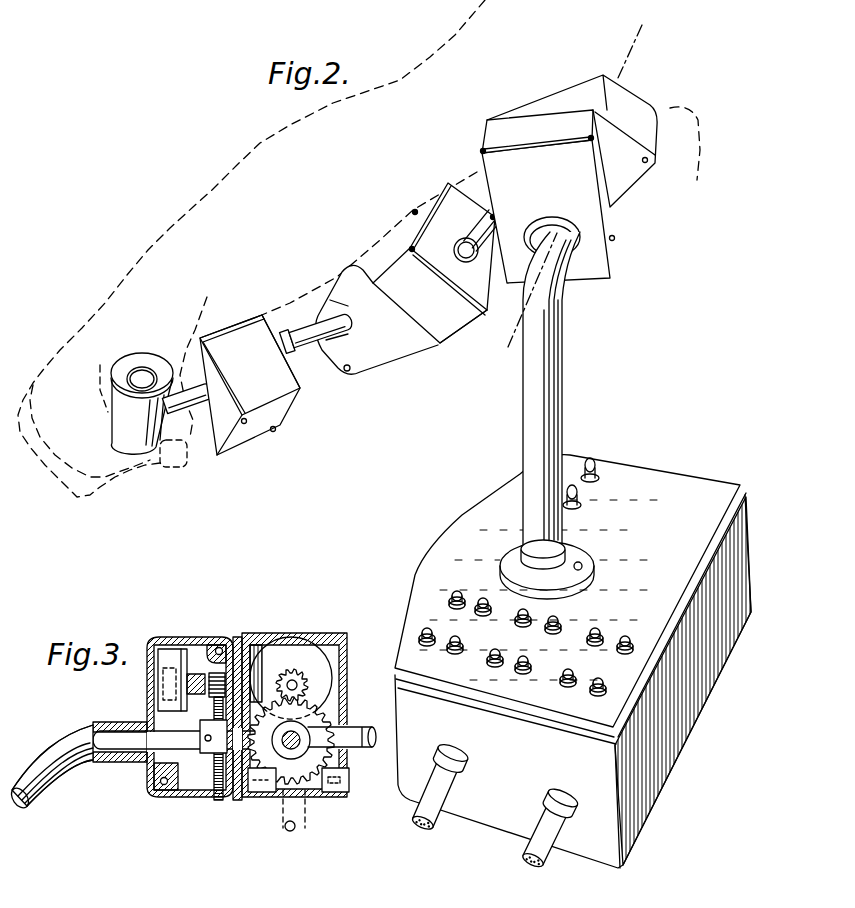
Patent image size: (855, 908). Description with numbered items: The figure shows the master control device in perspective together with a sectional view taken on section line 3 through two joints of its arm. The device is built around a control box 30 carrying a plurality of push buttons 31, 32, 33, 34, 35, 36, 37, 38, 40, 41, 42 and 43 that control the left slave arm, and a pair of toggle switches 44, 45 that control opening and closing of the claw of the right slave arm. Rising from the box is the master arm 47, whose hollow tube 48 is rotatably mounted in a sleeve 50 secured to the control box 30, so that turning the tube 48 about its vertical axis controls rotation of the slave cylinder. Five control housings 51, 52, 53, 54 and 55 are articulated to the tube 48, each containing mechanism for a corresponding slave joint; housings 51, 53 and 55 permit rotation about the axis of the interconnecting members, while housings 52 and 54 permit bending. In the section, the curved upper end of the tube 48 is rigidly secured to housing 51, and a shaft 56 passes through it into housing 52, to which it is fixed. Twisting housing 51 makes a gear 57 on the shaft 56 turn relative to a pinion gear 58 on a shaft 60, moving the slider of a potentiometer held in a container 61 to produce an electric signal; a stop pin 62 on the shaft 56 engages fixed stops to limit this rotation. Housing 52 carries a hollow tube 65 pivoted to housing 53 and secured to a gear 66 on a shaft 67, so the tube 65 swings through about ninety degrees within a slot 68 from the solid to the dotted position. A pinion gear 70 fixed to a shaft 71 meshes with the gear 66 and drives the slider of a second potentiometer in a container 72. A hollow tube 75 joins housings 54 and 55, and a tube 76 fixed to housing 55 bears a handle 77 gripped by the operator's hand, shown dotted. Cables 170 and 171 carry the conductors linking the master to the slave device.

In FIG. 2, the section line 3— 3 is at (622, 64).
In FIG. 2, the control box 30 is at (681, 490).
In FIG. 2, the push button 31 is at (427, 644).
In FIG. 2, the push button 32 is at (455, 651).
In FIG. 2, the push button 33 is at (458, 594).
In FIG. 2, the push button 34 is at (485, 600).
In FIG. 2, the push button 35 is at (495, 664).
In FIG. 2, the push button 36 is at (523, 671).
In FIG. 2, the push button 37 is at (515, 619).
In FIG. 2, the push button 38 is at (553, 620).
In FIG. 2, the push button 40 is at (568, 684).
In FIG. 2, the push button 41 is at (598, 693).
In FIG. 2, the push button 42 is at (596, 632).
In FIG. 2, the push button 43 is at (627, 640).
In FIG. 2, the toggle switch 44 is at (581, 497).
In FIG. 2, the toggle switch 45 is at (590, 460).
In FIG. 2, the master arm 47 is at (470, 335).
In FIG. 2, the hollow tube 48 is at (563, 395).
In FIG. 3, the hollow tube 48 is at (45, 742).
In FIG. 2, the sleeve 50 is at (567, 557).
In FIG. 2, the control housing 51 is at (562, 184).
In FIG. 3, the control housing 51 is at (168, 638).
In FIG. 2, the control housing 52 is at (648, 132).
In FIG. 3, the control housing 52 is at (270, 636).
In FIG. 2, the control housing 53 is at (408, 226).
In FIG. 2, the control housing 54 is at (342, 290).
In FIG. 2, the control housing 55 is at (233, 332).
In FIG. 3, the shaft 56 is at (181, 754).
In FIG. 3, the gear 57 is at (216, 801).
In FIG. 3, the pinion gear 58 is at (220, 672).
In FIG. 3, the shaft 60 is at (238, 640).
In FIG. 3, the container 61 is at (166, 635).
In FIG. 3, the stop pin 62 is at (143, 766).
In FIG. 2, the hollow tube 65 is at (487, 217).
In FIG. 3, the hollow tube 65 is at (363, 748).
In FIG. 3, the gear 66 is at (283, 795).
In FIG. 3, the shaft 67 is at (331, 715).
In FIG. 2, the slot 68 is at (347, 371).
In FIG. 3, the slot 68 is at (337, 794).
In FIG. 3, the pinion gear 70 is at (297, 675).
In FIG. 3, the shaft 71 is at (332, 664).
In FIG. 3, the container 72 is at (310, 645).
In FIG. 2, the hollow tube 75 is at (308, 338).
In FIG. 2, the tube 76 is at (198, 415).
In FIG. 2, the handle 77 is at (110, 417).
In FIG. 2, the cable 170 is at (433, 823).
In FIG. 2, the cable 171 is at (540, 865).